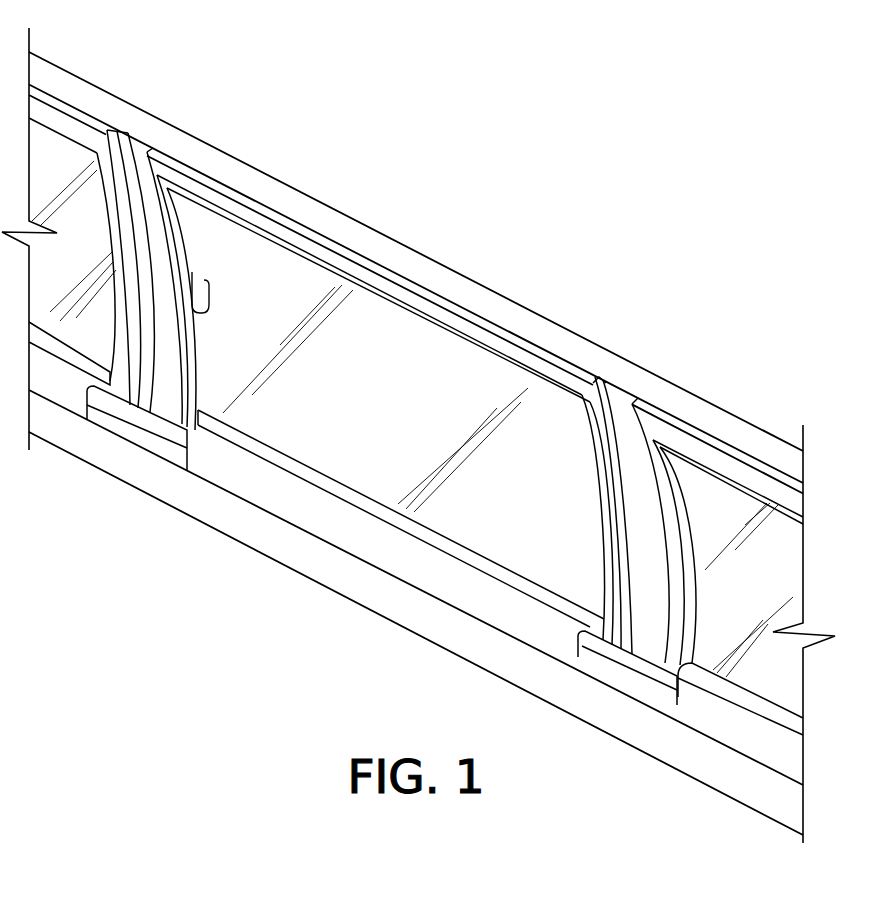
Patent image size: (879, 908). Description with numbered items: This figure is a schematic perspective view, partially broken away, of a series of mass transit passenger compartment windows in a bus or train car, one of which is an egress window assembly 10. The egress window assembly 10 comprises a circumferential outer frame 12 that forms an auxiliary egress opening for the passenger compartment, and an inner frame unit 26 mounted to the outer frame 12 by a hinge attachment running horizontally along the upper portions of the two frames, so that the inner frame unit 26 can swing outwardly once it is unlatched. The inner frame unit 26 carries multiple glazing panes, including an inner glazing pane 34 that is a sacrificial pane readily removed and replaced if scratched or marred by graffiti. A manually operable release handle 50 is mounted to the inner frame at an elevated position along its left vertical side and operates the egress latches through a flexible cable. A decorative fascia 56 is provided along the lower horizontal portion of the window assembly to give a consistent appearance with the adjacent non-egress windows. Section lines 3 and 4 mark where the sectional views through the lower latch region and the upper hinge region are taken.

The egress window assembly 10 is at (596, 319).
The outer frame 12 is at (235, 205).
The inner frame unit 26 is at (313, 250).
The inner glazing pane 34 is at (340, 438).
The release handle 50 is at (212, 291).
The decorative fascia 56 is at (211, 462).
The section line 3- 3 is at (441, 630).
The section line 4- 4 is at (441, 397).